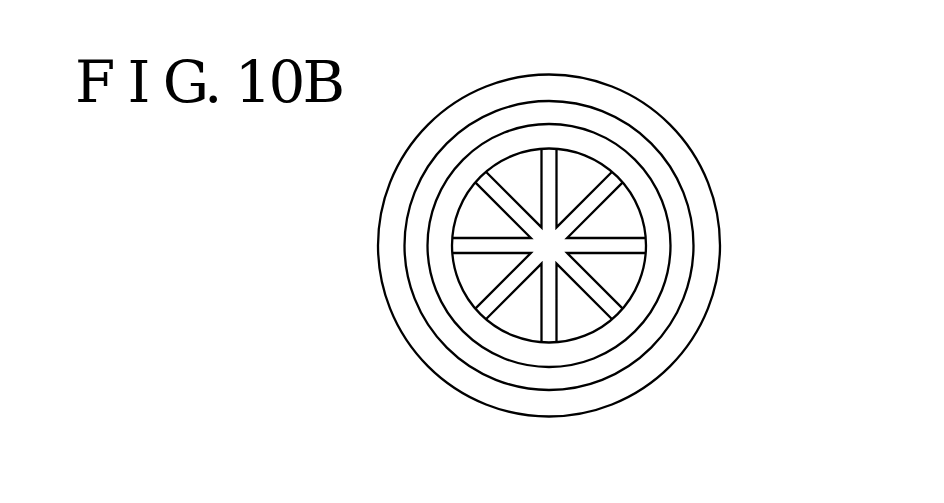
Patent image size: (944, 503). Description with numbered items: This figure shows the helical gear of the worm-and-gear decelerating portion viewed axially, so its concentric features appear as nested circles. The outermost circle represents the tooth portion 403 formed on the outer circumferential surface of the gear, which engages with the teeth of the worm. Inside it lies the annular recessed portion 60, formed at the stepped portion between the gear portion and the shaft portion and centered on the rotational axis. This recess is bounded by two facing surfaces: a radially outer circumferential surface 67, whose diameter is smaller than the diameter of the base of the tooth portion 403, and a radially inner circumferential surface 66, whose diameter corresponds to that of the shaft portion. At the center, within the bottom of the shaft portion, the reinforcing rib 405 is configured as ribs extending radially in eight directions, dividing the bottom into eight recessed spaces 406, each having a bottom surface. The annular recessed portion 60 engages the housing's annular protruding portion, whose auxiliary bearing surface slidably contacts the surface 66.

The tooth portion 403 is at (715, 202).
The radially outer circumferential surface 67 is at (403, 240).
The annular recessed portion 60 is at (425, 288).
The radially inner circumferential surface 66 is at (462, 328).
The reinforcing rib 405 is at (548, 302).
The sector-shaped opening 406 is at (622, 272).